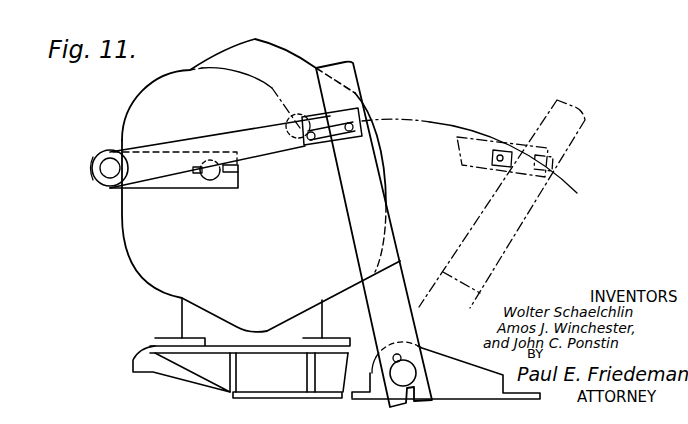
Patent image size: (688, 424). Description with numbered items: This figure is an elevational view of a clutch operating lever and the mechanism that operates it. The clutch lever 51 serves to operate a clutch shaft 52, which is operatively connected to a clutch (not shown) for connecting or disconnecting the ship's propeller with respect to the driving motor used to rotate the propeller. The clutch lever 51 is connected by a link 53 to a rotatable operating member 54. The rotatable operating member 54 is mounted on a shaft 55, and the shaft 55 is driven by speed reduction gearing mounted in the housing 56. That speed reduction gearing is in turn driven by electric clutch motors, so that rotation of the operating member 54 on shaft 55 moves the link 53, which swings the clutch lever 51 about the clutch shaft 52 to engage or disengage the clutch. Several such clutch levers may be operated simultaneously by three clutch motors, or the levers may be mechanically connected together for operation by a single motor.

The clutch lever 51 is at (350, 78).
The clutch shaft 52 is at (410, 377).
The link 53 is at (210, 141).
The rotatable operating member 54 is at (173, 185).
The shaft 55 is at (211, 180).
The housing 56 is at (278, 48).